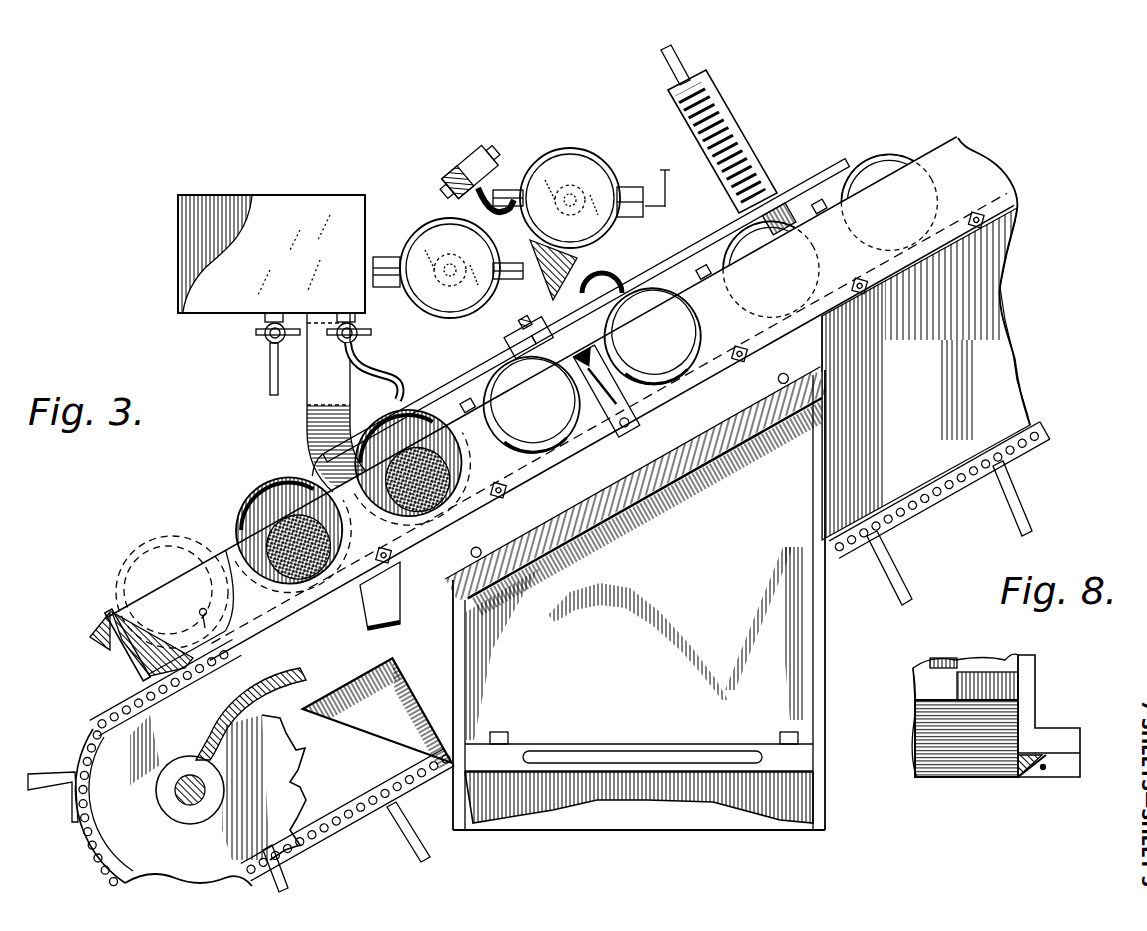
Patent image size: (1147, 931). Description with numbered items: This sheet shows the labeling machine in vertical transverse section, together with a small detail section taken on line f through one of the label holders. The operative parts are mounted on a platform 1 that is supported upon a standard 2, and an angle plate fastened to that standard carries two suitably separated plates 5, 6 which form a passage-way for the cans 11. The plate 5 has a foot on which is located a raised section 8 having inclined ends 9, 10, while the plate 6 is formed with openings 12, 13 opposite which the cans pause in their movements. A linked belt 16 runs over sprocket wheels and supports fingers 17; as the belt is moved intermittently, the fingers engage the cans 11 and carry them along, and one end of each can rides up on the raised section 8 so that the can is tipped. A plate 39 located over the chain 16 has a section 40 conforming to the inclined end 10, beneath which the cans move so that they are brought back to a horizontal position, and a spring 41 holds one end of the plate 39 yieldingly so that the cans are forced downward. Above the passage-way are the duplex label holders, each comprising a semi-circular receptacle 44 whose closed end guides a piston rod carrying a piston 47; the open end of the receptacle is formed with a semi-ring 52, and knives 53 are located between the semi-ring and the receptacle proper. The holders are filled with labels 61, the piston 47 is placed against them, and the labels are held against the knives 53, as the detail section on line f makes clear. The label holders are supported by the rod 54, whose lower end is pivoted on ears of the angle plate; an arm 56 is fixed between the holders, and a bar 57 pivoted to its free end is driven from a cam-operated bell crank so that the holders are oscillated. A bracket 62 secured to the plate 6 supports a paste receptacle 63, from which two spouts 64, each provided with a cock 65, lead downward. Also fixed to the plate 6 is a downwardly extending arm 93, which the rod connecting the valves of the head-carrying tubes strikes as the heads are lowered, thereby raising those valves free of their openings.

In FIG. 3, the platform 1 is at (625, 498).
In FIG. 3, the standard 2 is at (829, 790).
In FIG. 3, the plate 5 is at (190, 588).
In FIG. 3, the plate 6 is at (952, 144).
In FIG. 3, the raised section 8 is at (201, 627).
In FIG. 3, the inclined end 9 is at (141, 644).
In FIG. 3, the inclined end 10 is at (476, 490).
In FIG. 3, the cans 11 is at (268, 486).
In FIG. 3, the openings 12 is at (268, 580).
In FIG. 3, the openings 13 is at (492, 418).
In FIG. 3, the linked belt 16 is at (104, 724).
In FIG. 3, the fingers 17 is at (58, 776).
In FIG. 3, the plate 39 is at (673, 270).
In FIG. 3, the section 40 is at (442, 392).
In FIG. 3, the spring 41 is at (743, 134).
In FIG. 3, the semi-circular receptacle 44 is at (450, 318).
In FIG. 8, the semi-circular receptacle 44 is at (1049, 716).
In FIG. 8, the piston 47 is at (978, 672).
In FIG. 3, the semi-ring 52 is at (575, 156).
In FIG. 3, the knives 53 is at (514, 192).
In FIG. 8, the knives 53 is at (1056, 768).
In FIG. 3, the rod 54 is at (613, 278).
In FIG. 3, the arm 56 is at (483, 152).
In FIG. 3, the bar 57 is at (455, 160).
In FIG. 3, the labels 61 is at (511, 226).
In FIG. 8, the labels 61 is at (951, 778).
In FIG. 3, the bracket 62 is at (353, 471).
In FIG. 3, the paste receptacle 63 is at (320, 202).
In FIG. 3, the spouts 64 is at (270, 372).
In FIG. 3, the cock 65 is at (262, 336).
In FIG. 3, the arm 93 is at (584, 356).
In FIG. 3, the section line f is at (664, 190).